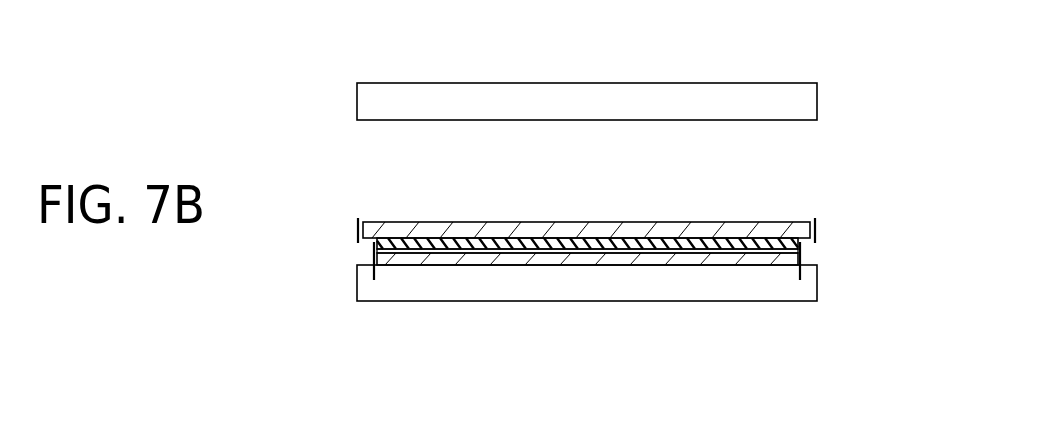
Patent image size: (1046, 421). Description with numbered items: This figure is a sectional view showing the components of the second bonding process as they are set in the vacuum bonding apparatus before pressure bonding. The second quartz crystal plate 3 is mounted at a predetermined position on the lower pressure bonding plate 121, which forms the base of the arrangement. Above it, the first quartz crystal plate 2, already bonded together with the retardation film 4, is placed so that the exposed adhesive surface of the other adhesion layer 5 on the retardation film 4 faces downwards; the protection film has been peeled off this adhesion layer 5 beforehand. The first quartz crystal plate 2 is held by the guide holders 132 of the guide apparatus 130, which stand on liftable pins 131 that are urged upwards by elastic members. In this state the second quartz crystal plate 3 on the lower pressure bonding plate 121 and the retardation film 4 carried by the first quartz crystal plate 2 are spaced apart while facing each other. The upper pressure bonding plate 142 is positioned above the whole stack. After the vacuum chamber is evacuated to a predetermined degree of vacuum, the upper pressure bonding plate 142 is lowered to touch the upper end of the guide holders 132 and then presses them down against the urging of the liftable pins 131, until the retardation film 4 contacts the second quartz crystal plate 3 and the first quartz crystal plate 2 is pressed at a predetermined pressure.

The upper pressure bonding plate 142 is at (762, 83).
The lower pressure bonding plate 121 is at (737, 299).
The first quartz crystal plate 2 is at (574, 222).
The other adhesion layer 5 is at (628, 250).
The retardation film 4 is at (698, 237).
The second quartz crystal plate 3 is at (463, 267).
The guide apparatus 130 is at (572, 229).
The liftable pins 131 is at (365, 256).
The guide holders 132 is at (357, 228).